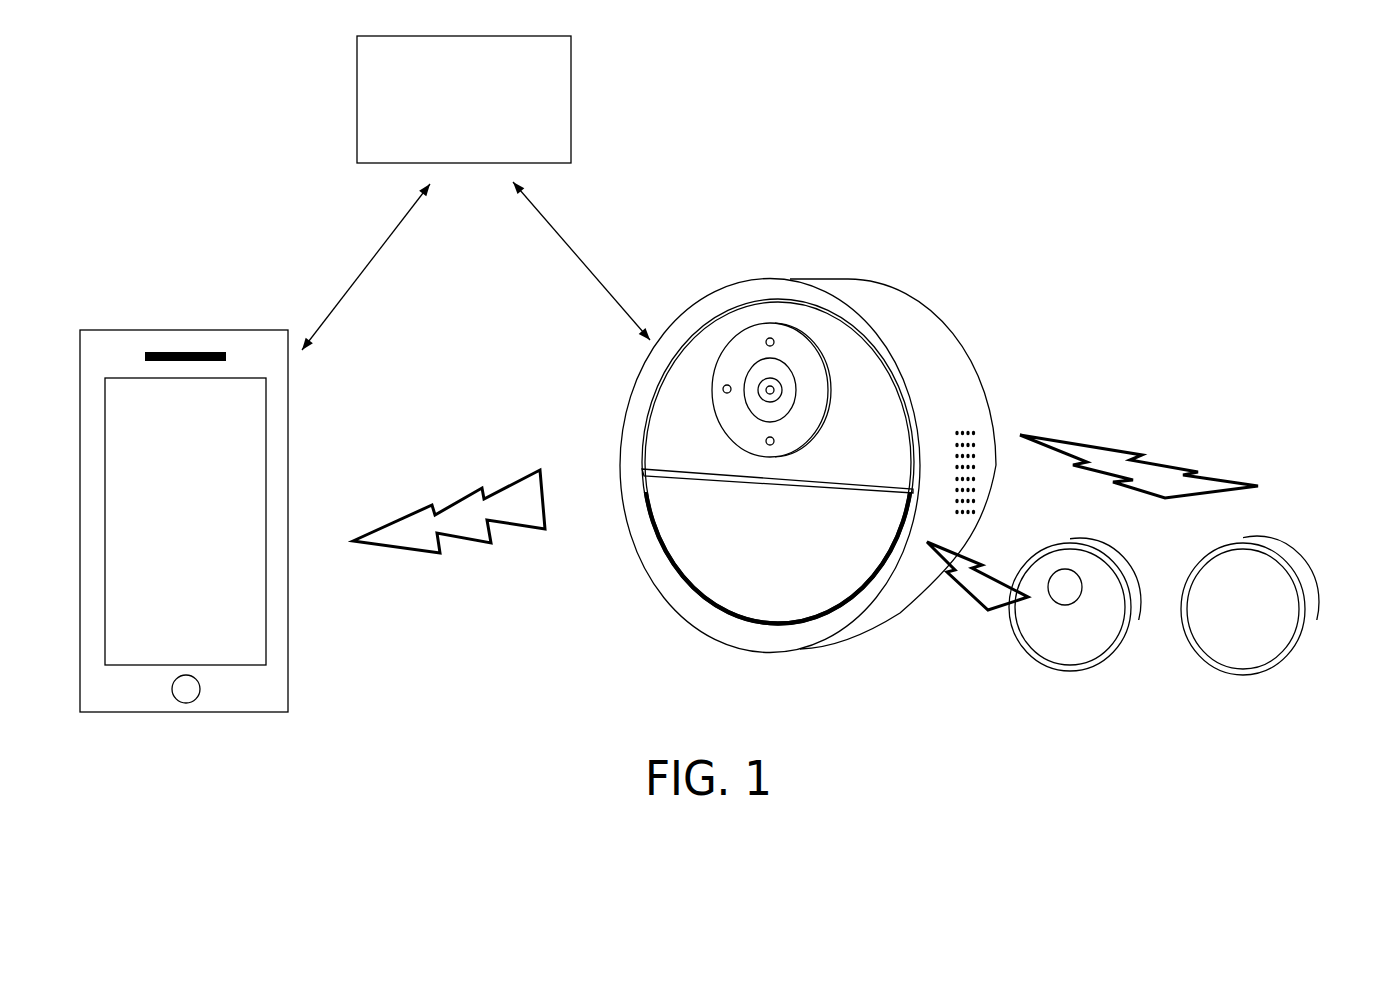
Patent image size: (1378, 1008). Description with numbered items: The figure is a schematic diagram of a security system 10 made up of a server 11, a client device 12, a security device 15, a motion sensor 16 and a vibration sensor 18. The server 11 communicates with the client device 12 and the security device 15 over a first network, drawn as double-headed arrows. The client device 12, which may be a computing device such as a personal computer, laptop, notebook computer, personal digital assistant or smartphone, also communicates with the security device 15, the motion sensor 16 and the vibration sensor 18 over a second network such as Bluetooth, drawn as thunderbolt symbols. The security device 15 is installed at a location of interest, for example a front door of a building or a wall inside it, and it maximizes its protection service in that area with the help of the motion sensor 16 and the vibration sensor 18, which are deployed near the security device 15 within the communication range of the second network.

The security system 10 is at (887, 119).
The server 11 is at (571, 98).
The client device 12 is at (175, 330).
The security device 15 is at (900, 300).
The motion sensor 16 is at (1130, 556).
The vibration sensor 18 is at (1285, 548).